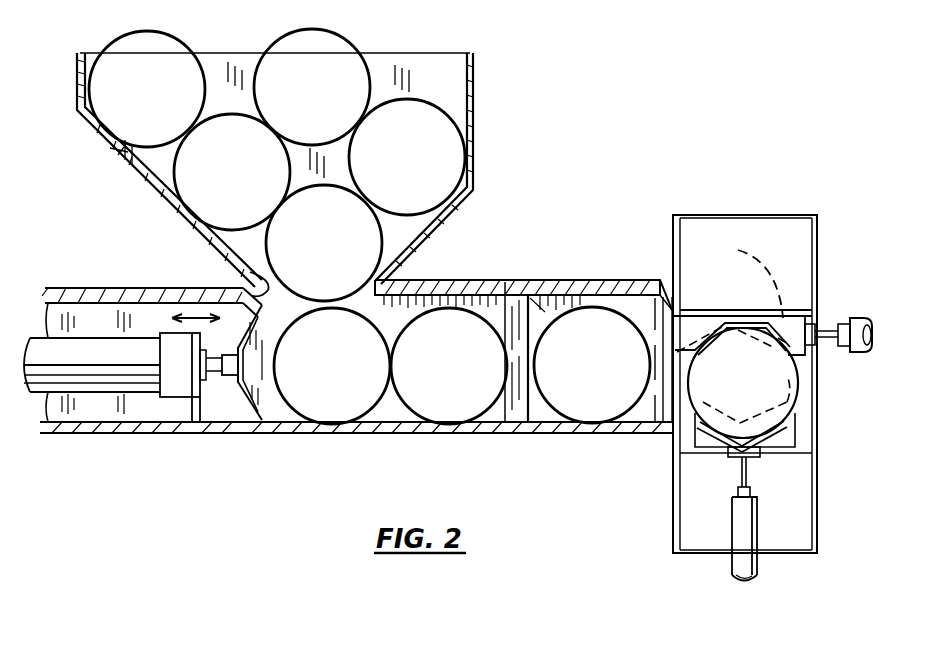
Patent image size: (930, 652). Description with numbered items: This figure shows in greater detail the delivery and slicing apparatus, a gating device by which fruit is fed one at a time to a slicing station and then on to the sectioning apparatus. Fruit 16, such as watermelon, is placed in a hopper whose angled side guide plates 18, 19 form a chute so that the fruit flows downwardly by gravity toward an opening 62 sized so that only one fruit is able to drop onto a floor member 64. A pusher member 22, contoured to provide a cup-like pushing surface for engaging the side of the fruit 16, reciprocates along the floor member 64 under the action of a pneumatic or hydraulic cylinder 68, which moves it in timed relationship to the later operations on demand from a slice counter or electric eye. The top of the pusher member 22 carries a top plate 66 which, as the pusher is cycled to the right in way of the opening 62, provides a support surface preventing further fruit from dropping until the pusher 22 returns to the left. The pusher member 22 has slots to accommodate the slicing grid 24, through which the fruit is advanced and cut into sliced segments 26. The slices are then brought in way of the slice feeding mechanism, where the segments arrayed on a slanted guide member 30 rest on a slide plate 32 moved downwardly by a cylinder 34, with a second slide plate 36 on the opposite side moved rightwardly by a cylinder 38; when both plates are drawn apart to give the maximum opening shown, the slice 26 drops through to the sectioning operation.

The fruit 16 is at (310, 103).
The side guide plate 18 is at (112, 130).
The side guide plate 19 is at (438, 218).
The pusher member 22 is at (246, 434).
The slicing grid 24 is at (530, 300).
The sliced segment 26 is at (800, 389).
The slanted guide member 30 is at (722, 445).
The slide plate 32 is at (780, 440).
The pneumatic or hydraulic cylinder 34 is at (757, 560).
The slide plate 36 is at (748, 275).
The pneumatic or hydraulic cylinder 38 is at (857, 318).
The opening 62 is at (237, 267).
The floor member 64 is at (343, 436).
The top plate 66 is at (91, 298).
The pneumatic or hydraulic cylinder 68 is at (117, 377).